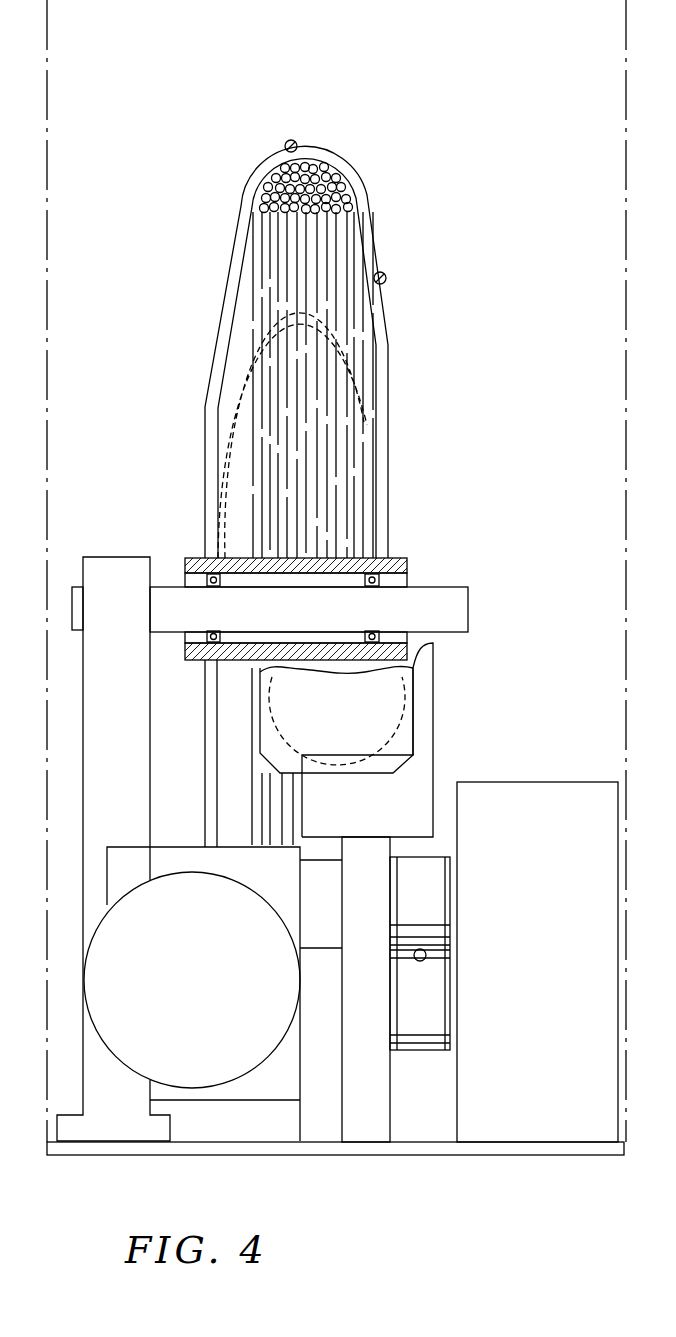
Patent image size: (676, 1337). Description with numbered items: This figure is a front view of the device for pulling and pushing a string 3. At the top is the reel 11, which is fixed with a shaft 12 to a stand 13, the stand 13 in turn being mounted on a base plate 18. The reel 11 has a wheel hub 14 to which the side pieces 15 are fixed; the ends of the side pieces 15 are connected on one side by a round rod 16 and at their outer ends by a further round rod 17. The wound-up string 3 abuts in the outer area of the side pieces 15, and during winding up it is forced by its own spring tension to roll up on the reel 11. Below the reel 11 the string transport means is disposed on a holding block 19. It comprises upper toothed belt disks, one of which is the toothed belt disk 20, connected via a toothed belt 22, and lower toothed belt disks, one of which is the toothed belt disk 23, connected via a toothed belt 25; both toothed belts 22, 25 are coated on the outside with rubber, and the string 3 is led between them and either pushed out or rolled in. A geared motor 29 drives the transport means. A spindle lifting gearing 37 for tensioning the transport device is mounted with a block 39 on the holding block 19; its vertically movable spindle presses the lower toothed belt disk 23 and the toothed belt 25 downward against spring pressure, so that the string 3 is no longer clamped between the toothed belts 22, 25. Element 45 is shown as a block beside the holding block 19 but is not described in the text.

The string 3 is at (260, 190).
The reel 11 is at (363, 157).
The shaft 12 is at (455, 615).
The stand 13 is at (97, 690).
The wheel hub 14 is at (405, 567).
The side pieces 15 is at (370, 219).
The round rod 16 is at (384, 284).
The round rod 17 is at (296, 139).
The base plate 18 is at (530, 1150).
The holding block 19 is at (362, 1130).
The upper toothed belt disk 20 is at (443, 907).
The toothed belt 22 is at (443, 868).
The lower toothed belt disk 23 is at (443, 1010).
The toothed belt 25 is at (443, 1037).
The geared motor 29 is at (204, 993).
The spindle lifting gearing 37 is at (395, 710).
The block 39 is at (422, 772).
The cabinet 45 is at (551, 1110).